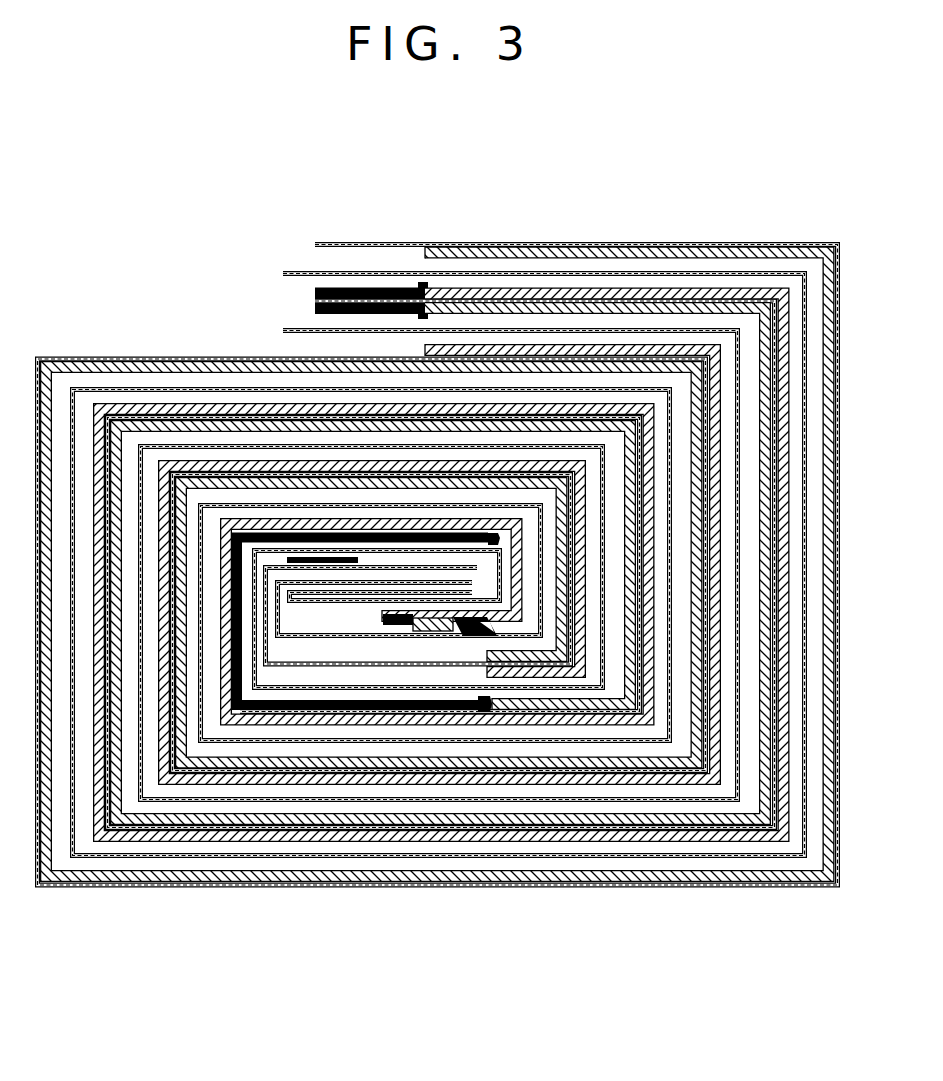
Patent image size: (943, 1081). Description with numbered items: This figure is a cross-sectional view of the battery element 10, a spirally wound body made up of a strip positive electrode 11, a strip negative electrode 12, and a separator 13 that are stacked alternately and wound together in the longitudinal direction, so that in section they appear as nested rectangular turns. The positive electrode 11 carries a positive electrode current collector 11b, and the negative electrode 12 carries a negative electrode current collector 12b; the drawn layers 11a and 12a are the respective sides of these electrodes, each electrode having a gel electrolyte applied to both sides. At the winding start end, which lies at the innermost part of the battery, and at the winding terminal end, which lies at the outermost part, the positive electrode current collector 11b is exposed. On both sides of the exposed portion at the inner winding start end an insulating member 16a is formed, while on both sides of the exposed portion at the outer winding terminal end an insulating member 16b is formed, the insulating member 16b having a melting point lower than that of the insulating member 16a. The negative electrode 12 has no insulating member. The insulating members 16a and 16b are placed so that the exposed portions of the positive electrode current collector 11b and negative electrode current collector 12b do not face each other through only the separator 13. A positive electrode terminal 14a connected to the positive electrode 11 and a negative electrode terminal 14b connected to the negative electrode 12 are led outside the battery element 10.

The battery element 10 is at (432, 138).
The positive electrode 11 is at (692, 195).
The first coil conductor upper layer 11a is at (716, 296).
The positive electrode current collector 11b is at (762, 306).
The negative electrode 12 is at (560, 177).
The second coil conductor upper layer 12a is at (580, 251).
The negative electrode current collector 12b is at (640, 251).
The separator 13 is at (470, 271).
The positive electrode terminal 14a is at (468, 634).
The negative electrode terminal 14b is at (310, 563).
The insulating member 16a is at (440, 630).
The insulating member 16b is at (343, 297).